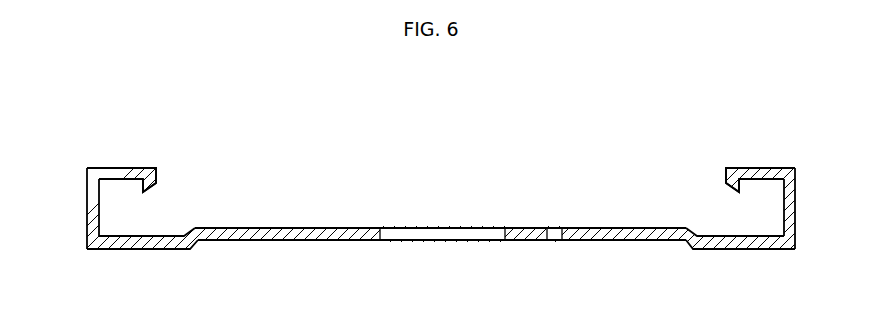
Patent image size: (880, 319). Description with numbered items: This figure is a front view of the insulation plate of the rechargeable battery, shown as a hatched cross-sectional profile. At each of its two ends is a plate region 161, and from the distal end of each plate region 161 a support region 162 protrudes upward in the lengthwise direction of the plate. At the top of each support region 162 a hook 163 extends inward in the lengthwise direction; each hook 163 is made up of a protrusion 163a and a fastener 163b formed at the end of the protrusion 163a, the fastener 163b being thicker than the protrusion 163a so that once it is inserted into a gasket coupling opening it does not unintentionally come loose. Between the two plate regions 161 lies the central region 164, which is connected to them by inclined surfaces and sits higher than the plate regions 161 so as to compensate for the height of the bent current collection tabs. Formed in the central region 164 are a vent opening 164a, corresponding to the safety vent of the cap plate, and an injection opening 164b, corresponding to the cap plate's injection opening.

The plate region 161 is at (135, 245).
The support region 162 is at (93, 211).
The hook 163 is at (198, 112).
The protrusion 163a is at (118, 173).
The fastener 163b is at (151, 188).
The central region 164 is at (300, 236).
The vent opening 164a is at (383, 232).
The injection opening 164b is at (558, 235).